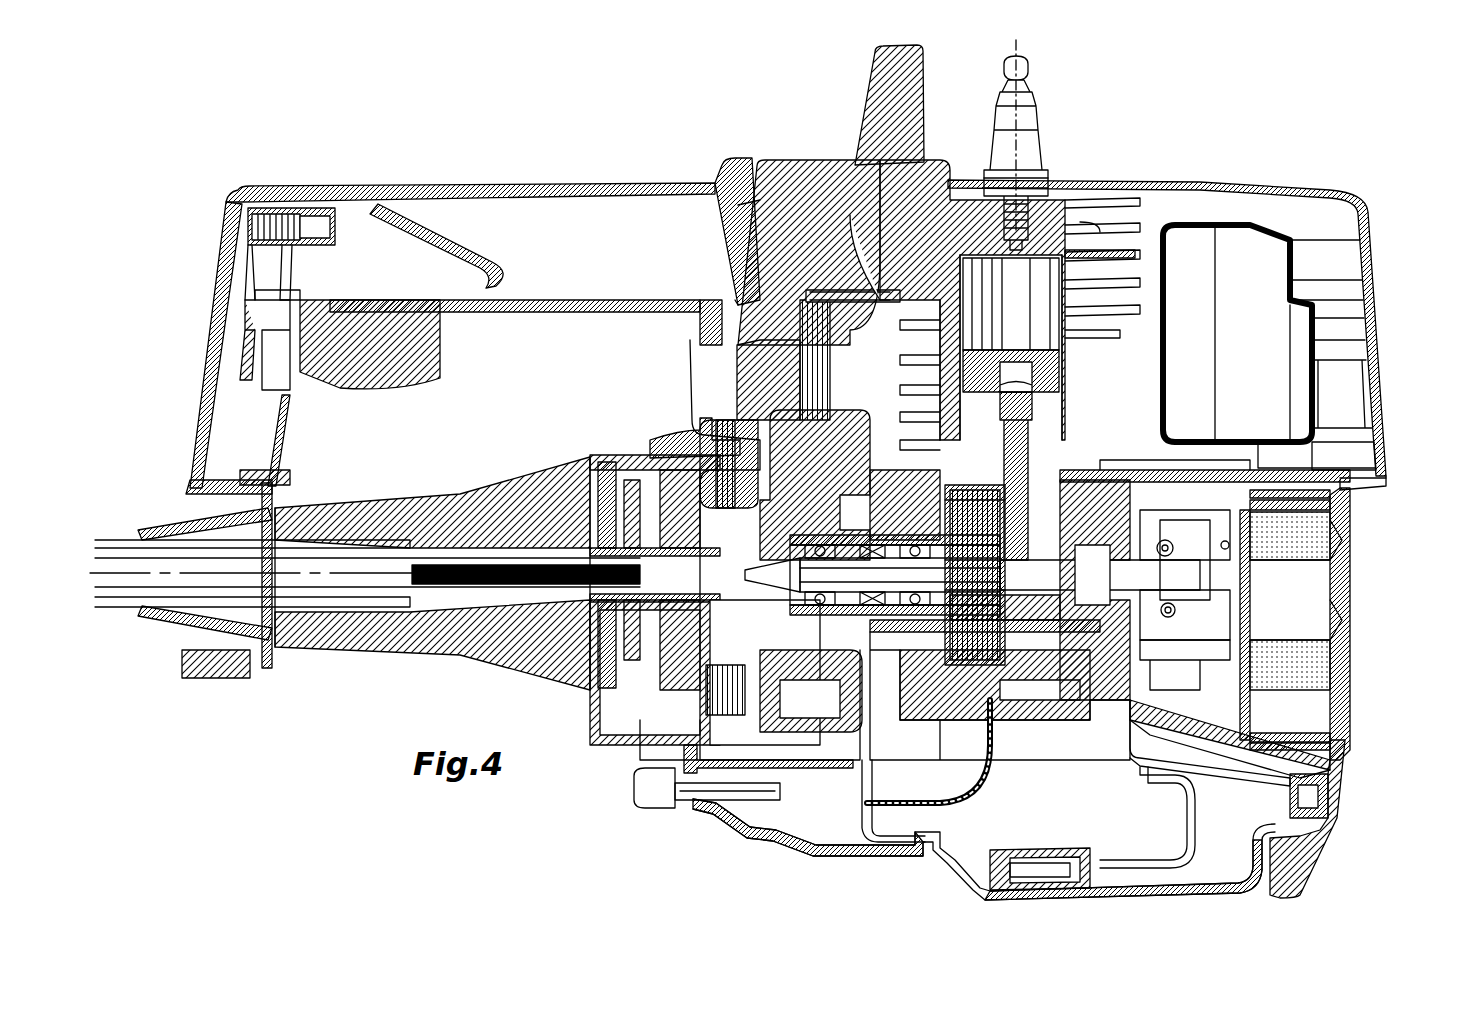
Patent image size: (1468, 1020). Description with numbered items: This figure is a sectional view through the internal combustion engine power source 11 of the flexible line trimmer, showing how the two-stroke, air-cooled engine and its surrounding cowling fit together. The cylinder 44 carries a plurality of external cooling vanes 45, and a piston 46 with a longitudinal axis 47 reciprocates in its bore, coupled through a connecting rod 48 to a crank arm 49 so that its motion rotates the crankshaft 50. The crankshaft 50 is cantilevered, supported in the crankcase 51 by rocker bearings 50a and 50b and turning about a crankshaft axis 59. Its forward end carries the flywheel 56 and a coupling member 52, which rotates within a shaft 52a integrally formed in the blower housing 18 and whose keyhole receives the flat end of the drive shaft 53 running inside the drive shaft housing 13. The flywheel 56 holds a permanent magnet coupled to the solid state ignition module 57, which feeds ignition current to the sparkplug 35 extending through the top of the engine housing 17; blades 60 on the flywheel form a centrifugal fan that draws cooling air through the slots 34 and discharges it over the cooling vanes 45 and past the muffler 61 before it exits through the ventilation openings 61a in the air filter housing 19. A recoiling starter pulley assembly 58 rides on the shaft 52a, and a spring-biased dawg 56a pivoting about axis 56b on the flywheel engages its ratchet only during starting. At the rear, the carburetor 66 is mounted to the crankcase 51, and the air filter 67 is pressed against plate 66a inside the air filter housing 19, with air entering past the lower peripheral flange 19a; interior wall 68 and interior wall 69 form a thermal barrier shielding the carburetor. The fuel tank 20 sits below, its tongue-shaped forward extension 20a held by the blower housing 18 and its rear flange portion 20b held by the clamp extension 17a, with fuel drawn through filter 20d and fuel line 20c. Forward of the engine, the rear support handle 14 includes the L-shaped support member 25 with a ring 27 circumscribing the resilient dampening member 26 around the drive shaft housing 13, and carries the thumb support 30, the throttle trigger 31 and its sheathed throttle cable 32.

The internal combustion engine power source 11 is at (1121, 100).
The drive shaft housing 13 is at (328, 600).
The rear support handle 14 is at (372, 168).
The engine housing 17 is at (1142, 182).
The clamp extension 17a is at (1346, 817).
The blower housing 18 is at (490, 672).
The air filter housing 19 is at (1352, 644).
The lower peripheral flange 19a is at (1352, 530).
The fuel tank 20 is at (1206, 896).
The tongue-shaped forward extension of fuel tank 20a is at (902, 857).
The rear flange portion 20b is at (1292, 795).
The fuel line 20c is at (1174, 812).
The filter 20d is at (1042, 850).
The L-shaped support member 25 is at (492, 186).
The resilient dampening member 26 is at (180, 632).
The ring 27 is at (262, 460).
The thumb support 30 is at (240, 188).
The throttle trigger 31 is at (440, 365).
The sheathed throttle cable 32 is at (654, 810).
The slots 34 is at (712, 470).
The sparkplug 35 is at (1040, 170).
The cylinder 44 is at (1092, 226).
The cooling vanes 45 is at (1140, 240).
The piston 46 is at (1030, 372).
The longitudinal axis 47 is at (1014, 330).
The connecting rod 48 is at (1030, 520).
The crank arm 49 is at (1010, 686).
The crankshaft 50 is at (885, 600).
The rocker bearing 50a is at (940, 676).
The rocker bearing 50b is at (812, 683).
The crankcase 51 is at (870, 618).
The coupling member 52 is at (660, 605).
The shaft 52a is at (596, 505).
The drive shaft 53 is at (447, 600).
The flywheel 56 is at (772, 725).
The dawg 56a is at (700, 718).
The axis 56b is at (802, 703).
The solid state ignition module 57 is at (760, 388).
The recoiling starter pulley assembly 58 is at (578, 695).
The crankshaft axis 59 is at (602, 620).
The blades 60 is at (720, 465).
The muffler 61 is at (1285, 290).
The ventilation openings 61a is at (1382, 335).
The carburetor 66 is at (1195, 630).
The plate 66a is at (1240, 680).
The air filter 67 is at (1352, 545).
The interior wall of air filter housing 68 is at (1380, 482).
The interior wall of engine housing 69 is at (1160, 470).